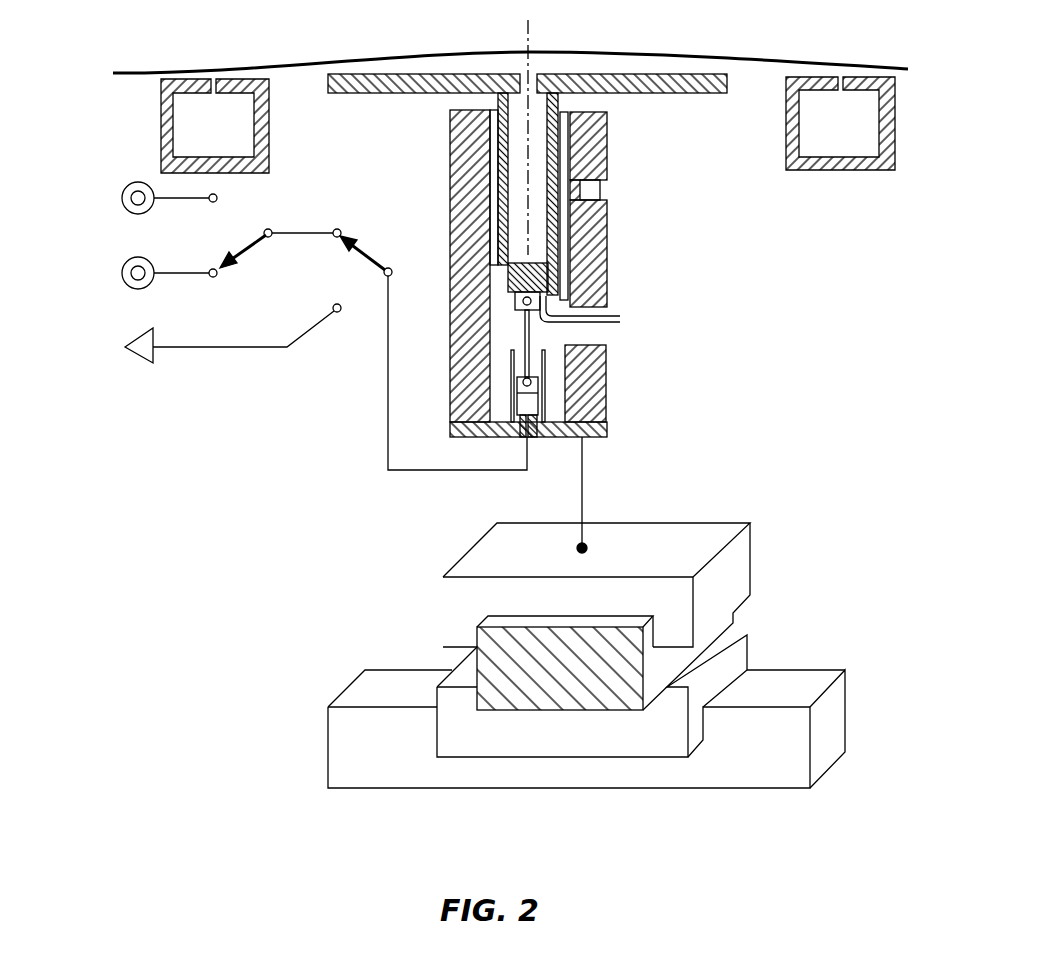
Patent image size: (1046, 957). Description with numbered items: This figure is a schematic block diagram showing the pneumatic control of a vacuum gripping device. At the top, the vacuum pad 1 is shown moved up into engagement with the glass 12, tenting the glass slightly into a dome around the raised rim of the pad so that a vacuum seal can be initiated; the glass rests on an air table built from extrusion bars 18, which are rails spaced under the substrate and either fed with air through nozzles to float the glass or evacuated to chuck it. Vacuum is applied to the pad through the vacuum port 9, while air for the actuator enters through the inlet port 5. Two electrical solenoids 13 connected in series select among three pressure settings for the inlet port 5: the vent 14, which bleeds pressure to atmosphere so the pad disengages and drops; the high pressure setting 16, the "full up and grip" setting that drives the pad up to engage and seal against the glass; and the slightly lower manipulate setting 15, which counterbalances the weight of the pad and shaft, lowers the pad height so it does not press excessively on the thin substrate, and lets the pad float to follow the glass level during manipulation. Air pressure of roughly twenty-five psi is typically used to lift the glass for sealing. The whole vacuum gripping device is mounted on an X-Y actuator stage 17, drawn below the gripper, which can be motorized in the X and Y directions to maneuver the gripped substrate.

The vacuum pad 1 is at (358, 73).
The glass 12 is at (595, 52).
The extrusion bars 18 is at (197, 138).
The high pressure setting 16 is at (132, 191).
The manipulate setting 15 is at (131, 264).
The vent 14 is at (139, 338).
The electrical solenoids 13 is at (243, 245).
The vacuum port 9 is at (617, 317).
The inlet port 5 is at (533, 443).
The X-Y actuator stage 17 is at (648, 547).